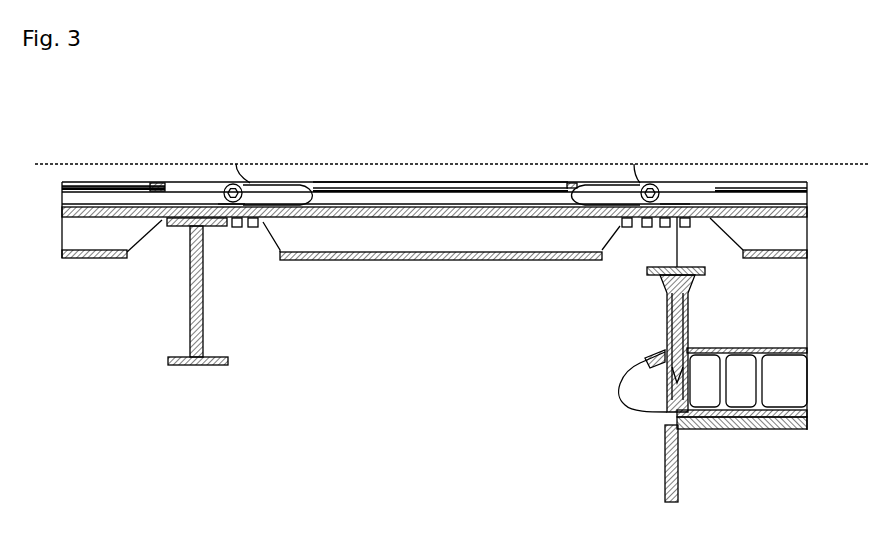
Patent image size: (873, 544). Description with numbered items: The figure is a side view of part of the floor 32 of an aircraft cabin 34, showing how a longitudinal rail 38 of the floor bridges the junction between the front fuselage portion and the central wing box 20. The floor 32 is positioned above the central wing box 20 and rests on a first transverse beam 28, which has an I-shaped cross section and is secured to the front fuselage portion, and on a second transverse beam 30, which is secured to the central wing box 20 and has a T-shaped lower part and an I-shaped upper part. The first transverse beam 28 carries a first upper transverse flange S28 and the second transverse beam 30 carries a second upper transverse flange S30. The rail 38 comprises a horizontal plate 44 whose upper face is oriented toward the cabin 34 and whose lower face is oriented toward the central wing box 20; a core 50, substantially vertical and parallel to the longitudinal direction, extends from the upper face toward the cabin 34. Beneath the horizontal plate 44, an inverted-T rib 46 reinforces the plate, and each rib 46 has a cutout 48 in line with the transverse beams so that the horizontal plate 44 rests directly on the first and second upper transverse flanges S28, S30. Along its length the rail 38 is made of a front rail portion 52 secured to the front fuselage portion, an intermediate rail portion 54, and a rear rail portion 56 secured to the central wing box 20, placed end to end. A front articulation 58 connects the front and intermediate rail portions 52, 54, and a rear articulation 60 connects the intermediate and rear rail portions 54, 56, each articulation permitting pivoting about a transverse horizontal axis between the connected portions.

The central wing box 20 is at (660, 470).
The first transverse beam 28 is at (188, 310).
The second transverse beam 30 is at (660, 318).
The floor 32 is at (738, 158).
The cabin 34 is at (434, 167).
The rail 38 is at (165, 183).
The horizontal plate 44 is at (90, 190).
The rib 46 is at (380, 270).
The cutout 48 is at (158, 242).
The core 50 is at (430, 188).
The front rail portion 52 is at (124, 164).
The intermediate rail portion 54 is at (458, 164).
The rear rail portion 56 is at (790, 164).
The front articulation 58 is at (255, 187).
The rear articulation 60 is at (645, 182).
The first upper transverse flange S28 is at (218, 192).
The second upper transverse flange S30 is at (683, 182).